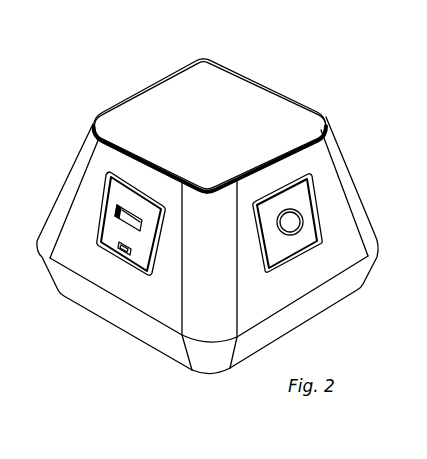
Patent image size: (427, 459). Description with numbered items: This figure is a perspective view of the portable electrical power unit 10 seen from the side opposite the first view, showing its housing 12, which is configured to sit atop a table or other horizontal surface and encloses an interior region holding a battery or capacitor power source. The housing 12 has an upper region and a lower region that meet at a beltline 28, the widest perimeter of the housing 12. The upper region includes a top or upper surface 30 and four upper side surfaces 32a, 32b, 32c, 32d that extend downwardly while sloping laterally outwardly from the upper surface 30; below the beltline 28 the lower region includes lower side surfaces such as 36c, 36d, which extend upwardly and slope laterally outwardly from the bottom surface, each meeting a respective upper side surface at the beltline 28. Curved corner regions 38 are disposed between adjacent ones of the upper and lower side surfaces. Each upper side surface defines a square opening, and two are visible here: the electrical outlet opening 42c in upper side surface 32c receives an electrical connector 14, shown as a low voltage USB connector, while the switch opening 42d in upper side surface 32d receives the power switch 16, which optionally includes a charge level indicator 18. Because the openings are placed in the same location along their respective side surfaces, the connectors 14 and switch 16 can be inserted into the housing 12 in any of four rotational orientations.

The portable electrical power unit 10 is at (197, 222).
The housing 12 is at (197, 222).
The electrical connector 14 is at (121, 227).
The power switch 16 is at (286, 224).
The charge level indicator 18 is at (290, 235).
The beltline 28 is at (187, 342).
The upper surface 30 is at (226, 95).
The upper side surface 32a is at (276, 80).
The upper side surface 32b is at (127, 92).
The upper side surface 32c is at (136, 172).
The upper side surface 32d is at (267, 180).
The lower side surface 36c is at (108, 311).
The lower side surface 36d is at (257, 340).
The curved corner region 38 is at (205, 57).
The electrical outlet opening 42c is at (157, 263).
The switch opening 42d is at (254, 238).